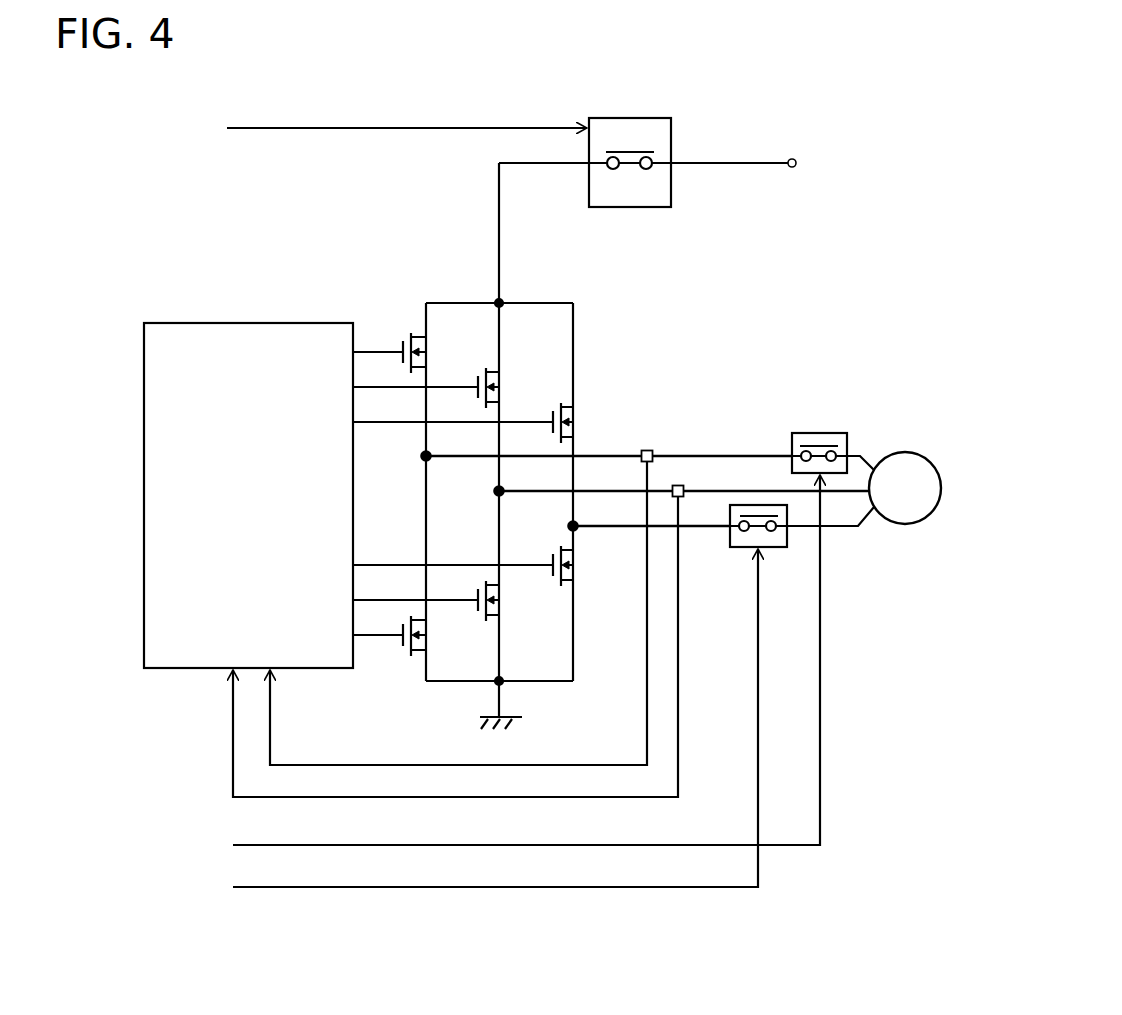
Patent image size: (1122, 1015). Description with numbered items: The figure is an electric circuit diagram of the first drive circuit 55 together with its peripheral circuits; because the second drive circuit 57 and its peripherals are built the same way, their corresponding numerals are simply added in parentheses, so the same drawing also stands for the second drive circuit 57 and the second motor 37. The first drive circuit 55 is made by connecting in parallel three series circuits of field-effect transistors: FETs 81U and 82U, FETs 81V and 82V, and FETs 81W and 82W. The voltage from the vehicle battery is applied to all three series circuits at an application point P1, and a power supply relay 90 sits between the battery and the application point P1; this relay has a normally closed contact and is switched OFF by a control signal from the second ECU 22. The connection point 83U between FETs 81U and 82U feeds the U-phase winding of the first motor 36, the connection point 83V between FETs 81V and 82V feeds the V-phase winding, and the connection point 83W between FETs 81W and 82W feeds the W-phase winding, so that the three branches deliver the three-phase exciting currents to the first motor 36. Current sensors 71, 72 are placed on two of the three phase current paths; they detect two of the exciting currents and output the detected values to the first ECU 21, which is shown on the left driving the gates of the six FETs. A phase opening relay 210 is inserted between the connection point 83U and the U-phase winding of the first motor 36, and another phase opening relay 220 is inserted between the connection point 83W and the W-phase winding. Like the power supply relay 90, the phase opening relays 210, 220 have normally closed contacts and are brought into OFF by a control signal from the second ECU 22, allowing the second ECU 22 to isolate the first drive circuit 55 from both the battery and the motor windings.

The first ECU 21 is at (464, 510).
The second ECU 22 is at (178, 322).
The power supply relay 90 is at (672, 133).
The first drive circuit 55 is at (618, 485).
The second drive circuit 57 is at (682, 306).
The application point P1 is at (501, 301).
The FET 81U is at (416, 332).
The FET 81V is at (490, 367).
The FET 81W is at (564, 402).
The FET 82U is at (421, 656).
The FET 82V is at (490, 620).
The FET 82W is at (560, 588).
The connection point 83U is at (424, 459).
The connection point 83V is at (497, 494).
The connection point 83W is at (576, 529).
The current sensor 71 is at (648, 446).
The current sensor 72 is at (684, 484).
The phase opening relay 210 is at (853, 432).
The phase opening relay 220 is at (730, 548).
The first motor 36 is at (909, 519).
The second motor 37 is at (902, 525).